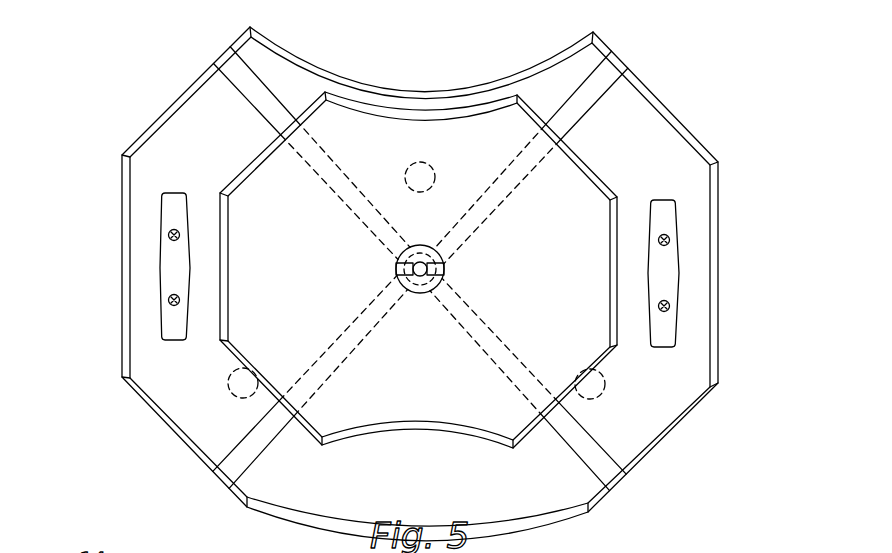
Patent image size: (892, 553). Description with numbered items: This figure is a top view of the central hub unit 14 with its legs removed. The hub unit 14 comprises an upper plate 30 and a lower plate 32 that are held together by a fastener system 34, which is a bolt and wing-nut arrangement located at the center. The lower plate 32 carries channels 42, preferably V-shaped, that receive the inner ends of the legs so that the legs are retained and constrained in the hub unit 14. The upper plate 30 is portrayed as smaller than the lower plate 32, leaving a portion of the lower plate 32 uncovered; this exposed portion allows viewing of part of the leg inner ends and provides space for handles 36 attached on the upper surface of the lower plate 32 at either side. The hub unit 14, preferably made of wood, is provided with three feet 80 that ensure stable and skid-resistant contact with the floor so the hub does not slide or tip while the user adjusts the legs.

The hub unit 14 is at (168, 80).
The upper plate 30 is at (562, 184).
The lower plate 32 is at (178, 385).
The fastener system 34 is at (445, 268).
The handles 36 is at (173, 265).
The lower plate channels 42 is at (228, 77).
The feet 80 is at (426, 162).